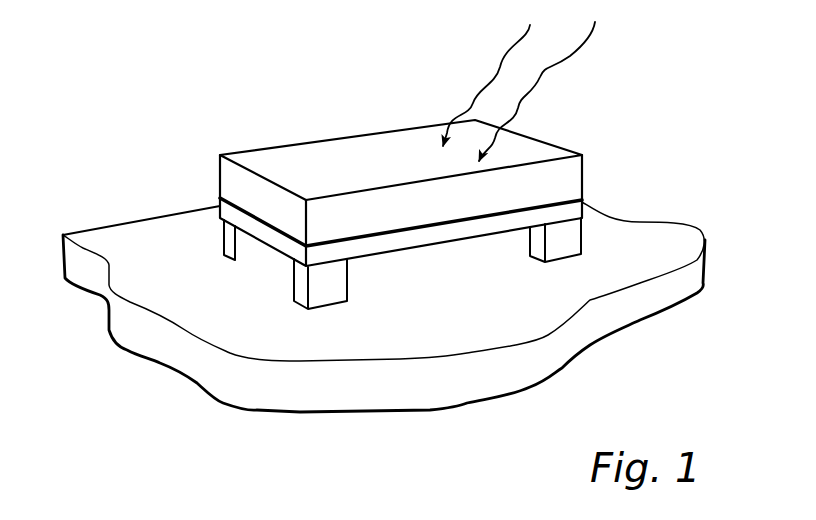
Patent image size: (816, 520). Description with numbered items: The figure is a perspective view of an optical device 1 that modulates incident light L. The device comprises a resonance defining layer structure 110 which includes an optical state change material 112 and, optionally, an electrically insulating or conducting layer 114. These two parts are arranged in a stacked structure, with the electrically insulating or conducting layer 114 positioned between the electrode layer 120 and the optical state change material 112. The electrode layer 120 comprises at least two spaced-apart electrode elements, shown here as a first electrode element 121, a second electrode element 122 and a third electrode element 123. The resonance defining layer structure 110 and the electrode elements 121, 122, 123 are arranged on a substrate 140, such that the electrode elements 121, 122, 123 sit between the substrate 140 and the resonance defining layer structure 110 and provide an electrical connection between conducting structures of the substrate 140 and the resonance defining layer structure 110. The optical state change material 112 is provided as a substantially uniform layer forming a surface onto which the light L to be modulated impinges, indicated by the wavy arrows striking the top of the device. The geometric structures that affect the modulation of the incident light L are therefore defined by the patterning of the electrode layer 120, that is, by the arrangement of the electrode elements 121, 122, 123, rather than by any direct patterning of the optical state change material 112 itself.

The optical device 1 is at (387, 242).
The resonance defining layer structure 110 is at (339, 262).
The optical state change material 112 is at (308, 157).
The electrically insulating or conducting layer 114 is at (283, 245).
The electrode layer 120 is at (396, 305).
The first electrode element 121 is at (227, 237).
The second electrode element 122 is at (328, 287).
The third electrode element 123 is at (565, 238).
The substrate 140 is at (603, 315).
The incident light L is at (524, 40).